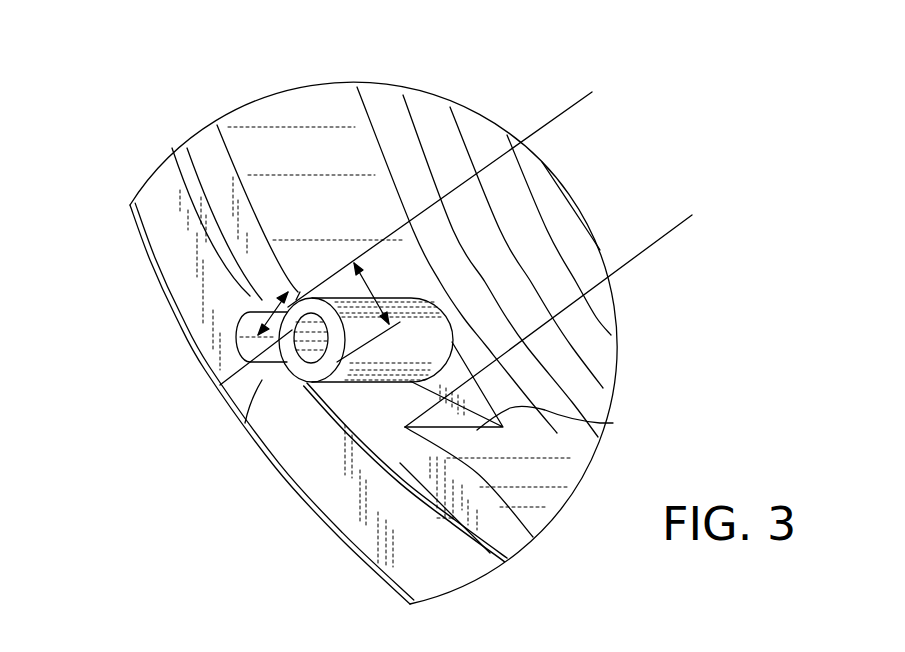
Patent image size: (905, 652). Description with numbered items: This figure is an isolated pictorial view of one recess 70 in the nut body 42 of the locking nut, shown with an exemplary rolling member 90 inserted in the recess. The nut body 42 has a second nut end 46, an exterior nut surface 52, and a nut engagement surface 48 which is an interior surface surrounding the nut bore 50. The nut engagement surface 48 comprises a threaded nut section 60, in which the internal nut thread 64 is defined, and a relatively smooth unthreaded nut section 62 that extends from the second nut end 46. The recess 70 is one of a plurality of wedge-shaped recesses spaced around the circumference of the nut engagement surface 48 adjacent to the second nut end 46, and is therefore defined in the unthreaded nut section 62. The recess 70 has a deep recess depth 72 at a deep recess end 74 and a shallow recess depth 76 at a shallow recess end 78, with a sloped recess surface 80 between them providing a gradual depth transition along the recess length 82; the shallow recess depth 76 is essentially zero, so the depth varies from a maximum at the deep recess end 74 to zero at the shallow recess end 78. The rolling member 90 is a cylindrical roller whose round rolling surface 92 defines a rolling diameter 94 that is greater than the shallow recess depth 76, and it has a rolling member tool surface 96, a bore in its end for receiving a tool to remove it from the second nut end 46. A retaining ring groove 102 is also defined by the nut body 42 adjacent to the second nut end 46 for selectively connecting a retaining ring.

The nut body 42 is at (165, 202).
The second nut end 46 is at (180, 275).
The nut engagement surface 48 is at (430, 127).
The nut bore 50 is at (558, 350).
The exterior nut surface 52 is at (306, 501).
The threaded nut section 60 is at (393, 108).
The unthreaded nut section 62 is at (307, 115).
The internal nut thread 64 is at (562, 255).
The recess 70 is at (330, 398).
The deep recess depth 72 is at (265, 297).
The deep recess end 74 is at (303, 278).
The shallow recess depth 76 is at (613, 423).
The shallow recess end 78 is at (558, 515).
The recess surface 80 is at (417, 414).
The recess length 82 is at (583, 100).
The rolling member 90 is at (318, 395).
The rolling surface 92 is at (245, 423).
The rolling diameter 94 is at (372, 295).
The rolling member tool surface 96 is at (247, 357).
The retaining ring groove 102 is at (205, 170).